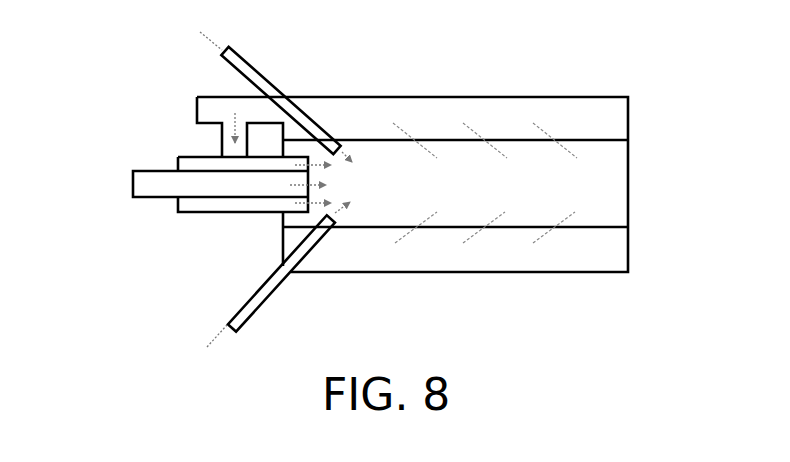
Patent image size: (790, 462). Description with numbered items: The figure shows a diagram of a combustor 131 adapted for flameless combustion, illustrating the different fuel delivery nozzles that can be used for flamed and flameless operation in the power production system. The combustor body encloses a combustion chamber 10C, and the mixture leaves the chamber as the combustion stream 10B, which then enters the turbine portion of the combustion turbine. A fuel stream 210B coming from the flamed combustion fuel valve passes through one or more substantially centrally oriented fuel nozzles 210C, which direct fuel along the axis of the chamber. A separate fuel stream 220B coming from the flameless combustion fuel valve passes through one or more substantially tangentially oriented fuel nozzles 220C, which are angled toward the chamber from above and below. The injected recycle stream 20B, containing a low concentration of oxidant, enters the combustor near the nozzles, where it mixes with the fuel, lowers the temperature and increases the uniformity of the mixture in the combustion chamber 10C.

The combustion stream 10B is at (607, 185).
The combustion chamber 10C is at (455, 183).
The flameless combustor 131 is at (430, 74).
The injected recycle stream 20B is at (241, 108).
The fuel stream 210B is at (144, 185).
The centrally oriented fuel nozzle 210C is at (160, 198).
The fuel stream 220B is at (250, 178).
The tangentially oriented fuel nozzle 220C is at (272, 86).